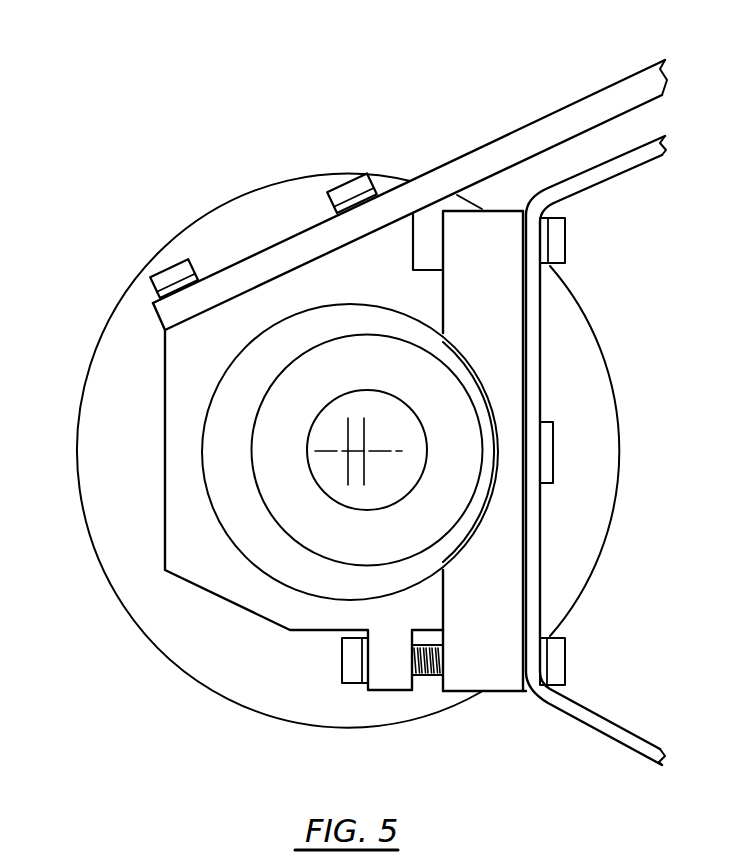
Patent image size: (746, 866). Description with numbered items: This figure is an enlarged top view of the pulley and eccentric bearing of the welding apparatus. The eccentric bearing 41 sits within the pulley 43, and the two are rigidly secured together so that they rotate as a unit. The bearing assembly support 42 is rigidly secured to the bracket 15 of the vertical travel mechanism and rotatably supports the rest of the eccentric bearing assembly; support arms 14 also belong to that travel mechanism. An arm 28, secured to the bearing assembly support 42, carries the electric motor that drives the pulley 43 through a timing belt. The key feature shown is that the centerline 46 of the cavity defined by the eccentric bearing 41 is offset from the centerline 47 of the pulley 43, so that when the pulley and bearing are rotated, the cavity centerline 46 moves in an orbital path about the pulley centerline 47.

The support arms 14 is at (618, 178).
The bracket 15 is at (503, 693).
The arm 28 is at (580, 97).
The eccentric bearing 41 is at (203, 420).
The bearing assembly support 42 is at (162, 533).
The pulley 43 is at (152, 645).
The centerline of the cavity 46 is at (365, 452).
The centerline of the pulley 47 is at (347, 453).